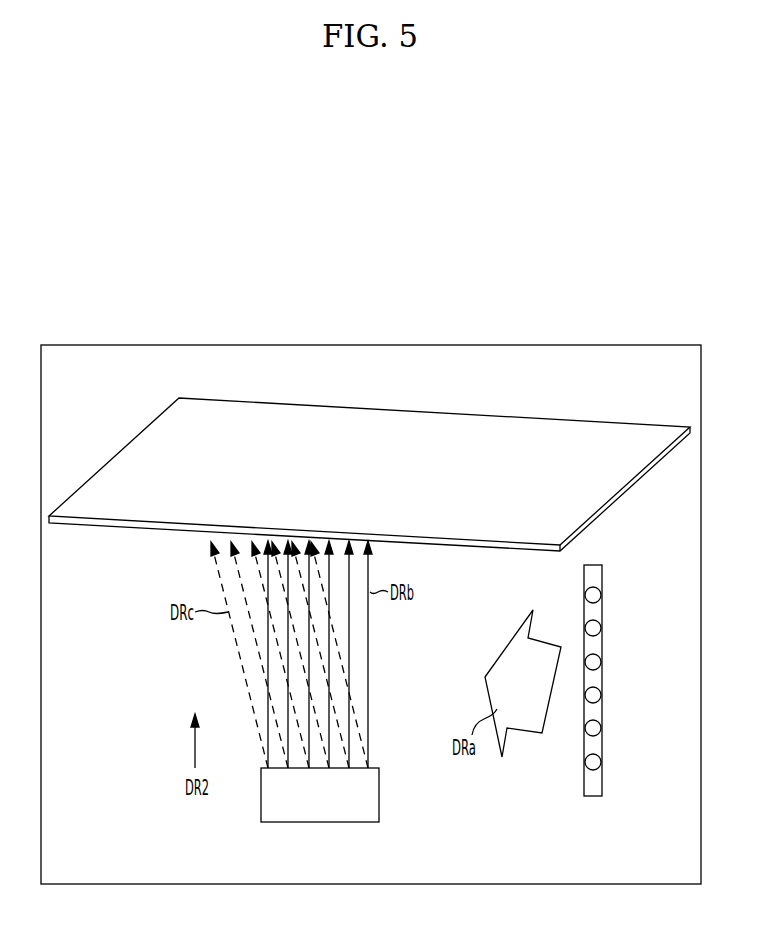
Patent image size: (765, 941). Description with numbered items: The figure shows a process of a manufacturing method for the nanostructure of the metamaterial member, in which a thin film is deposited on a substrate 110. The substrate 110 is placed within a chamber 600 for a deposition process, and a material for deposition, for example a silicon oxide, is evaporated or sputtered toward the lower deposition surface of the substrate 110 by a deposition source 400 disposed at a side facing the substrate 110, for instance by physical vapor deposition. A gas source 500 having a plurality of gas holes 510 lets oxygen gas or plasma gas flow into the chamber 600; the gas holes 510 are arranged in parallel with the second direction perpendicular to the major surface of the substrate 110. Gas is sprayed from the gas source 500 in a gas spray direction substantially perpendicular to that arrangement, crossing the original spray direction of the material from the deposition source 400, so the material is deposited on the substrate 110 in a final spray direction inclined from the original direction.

The chamber 600 is at (258, 344).
The substrate 110 is at (449, 428).
The deposition source 400 is at (296, 822).
The gas source 500 is at (626, 662).
The gas hole 510 is at (595, 628).